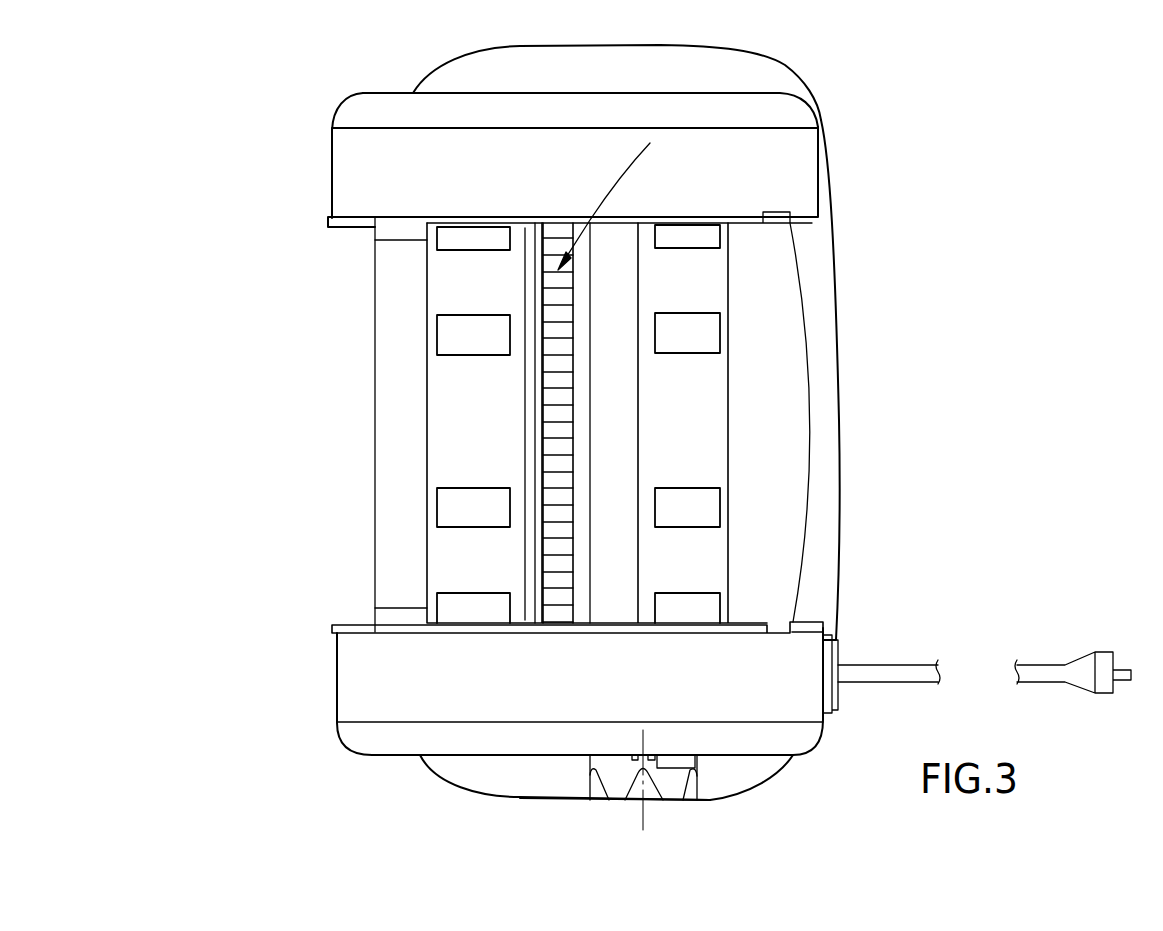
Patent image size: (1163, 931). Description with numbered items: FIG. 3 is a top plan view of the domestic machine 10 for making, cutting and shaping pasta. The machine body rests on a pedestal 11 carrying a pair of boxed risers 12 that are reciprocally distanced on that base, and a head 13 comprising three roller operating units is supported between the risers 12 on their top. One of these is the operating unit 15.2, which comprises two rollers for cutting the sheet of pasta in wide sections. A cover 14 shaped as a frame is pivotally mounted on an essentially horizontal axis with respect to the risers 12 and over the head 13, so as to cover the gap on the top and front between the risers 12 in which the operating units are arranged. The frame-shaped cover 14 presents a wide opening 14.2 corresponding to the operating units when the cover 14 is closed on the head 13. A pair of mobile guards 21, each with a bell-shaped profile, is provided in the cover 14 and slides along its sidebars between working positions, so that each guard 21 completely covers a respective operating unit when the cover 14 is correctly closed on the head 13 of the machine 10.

The domestic machine for making, cutting and shaping pasta 10 is at (905, 135).
The pedestal 11 is at (773, 777).
The boxed risers 12 is at (345, 173).
The head 13 is at (565, 389).
The cover 14 is at (787, 460).
The wide opening 14.2 is at (660, 303).
The roller operating unit for cutting the pasta sheet in wide sections 15.2 is at (767, 43).
The mobile guards 21 is at (452, 428).